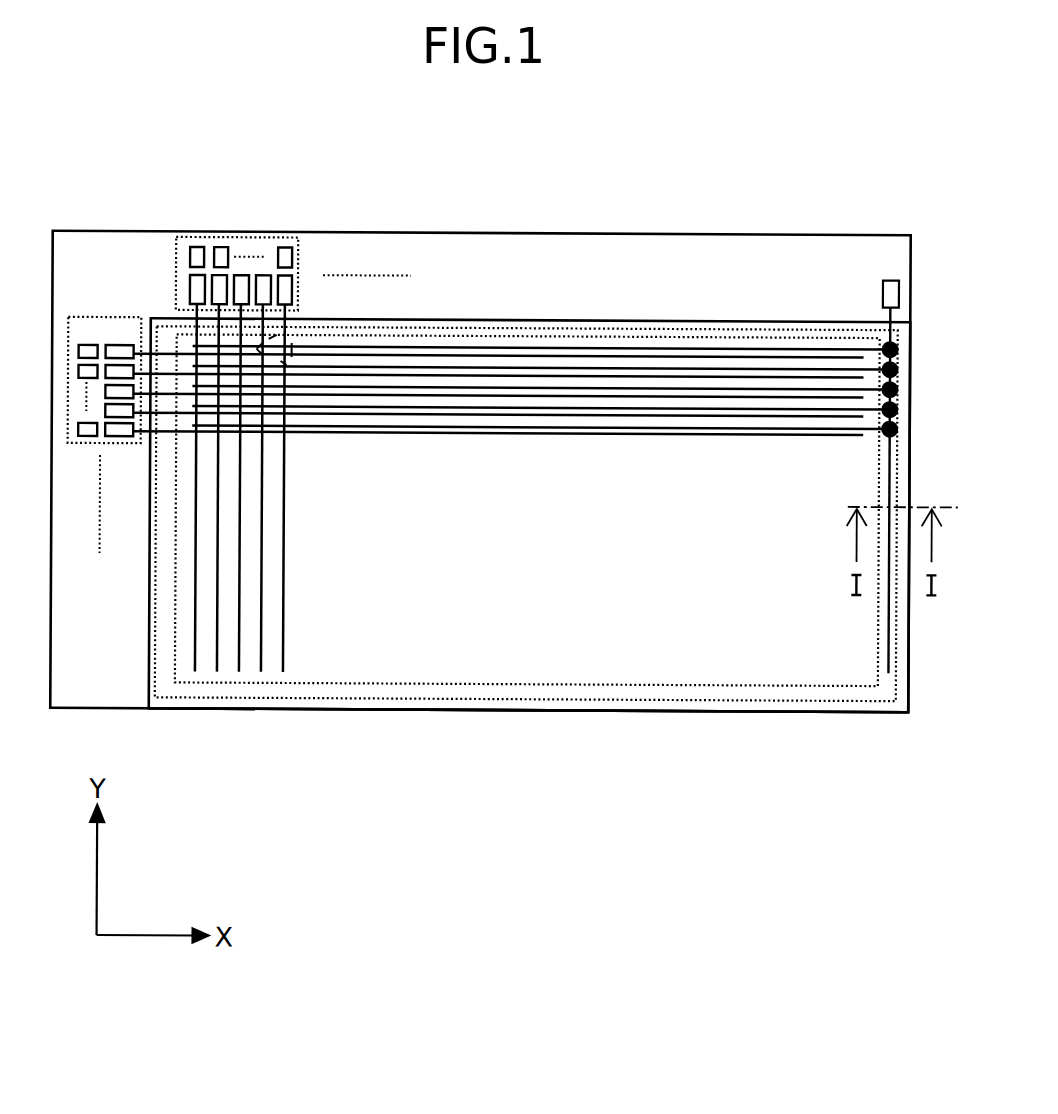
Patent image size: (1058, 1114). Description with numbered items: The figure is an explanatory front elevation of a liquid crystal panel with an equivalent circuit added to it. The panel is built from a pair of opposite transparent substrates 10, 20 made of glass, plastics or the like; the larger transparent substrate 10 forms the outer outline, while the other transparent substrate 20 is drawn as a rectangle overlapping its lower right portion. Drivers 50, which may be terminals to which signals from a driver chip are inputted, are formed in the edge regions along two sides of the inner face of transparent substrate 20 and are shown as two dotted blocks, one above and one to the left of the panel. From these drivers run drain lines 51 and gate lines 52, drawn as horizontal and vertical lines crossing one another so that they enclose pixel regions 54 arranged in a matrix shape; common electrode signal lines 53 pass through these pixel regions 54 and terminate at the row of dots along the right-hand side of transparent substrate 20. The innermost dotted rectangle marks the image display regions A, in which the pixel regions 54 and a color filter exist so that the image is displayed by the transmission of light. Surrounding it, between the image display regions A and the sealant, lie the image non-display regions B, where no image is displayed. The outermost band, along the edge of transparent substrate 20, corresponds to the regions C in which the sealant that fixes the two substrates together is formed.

The transparent substrate 10 is at (697, 233).
The transparent substrate 20 is at (793, 320).
The drivers 50 is at (108, 319).
The drain lines 51 is at (363, 434).
The gate lines 52 is at (284, 593).
The common electrode signal lines 53 is at (617, 434).
The pixel regions 54 is at (292, 351).
The image display regions A is at (720, 662).
The image non-display regions B is at (590, 699).
The regions forming the sealant C is at (483, 710).